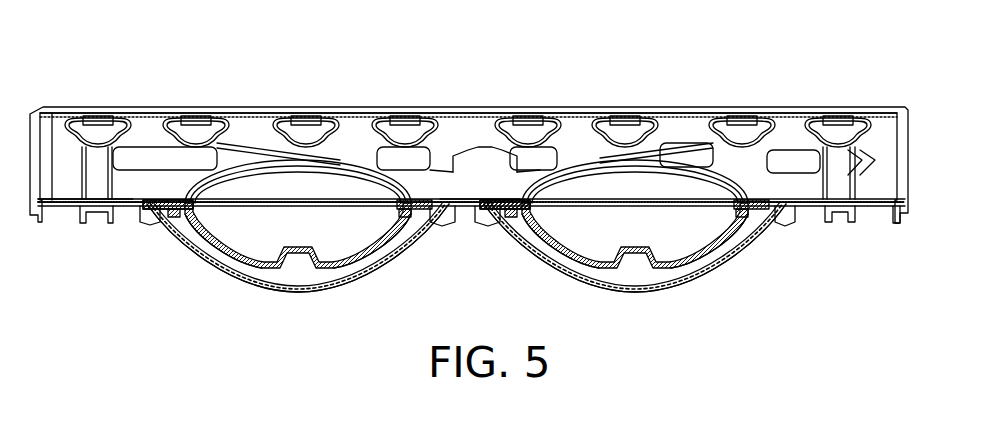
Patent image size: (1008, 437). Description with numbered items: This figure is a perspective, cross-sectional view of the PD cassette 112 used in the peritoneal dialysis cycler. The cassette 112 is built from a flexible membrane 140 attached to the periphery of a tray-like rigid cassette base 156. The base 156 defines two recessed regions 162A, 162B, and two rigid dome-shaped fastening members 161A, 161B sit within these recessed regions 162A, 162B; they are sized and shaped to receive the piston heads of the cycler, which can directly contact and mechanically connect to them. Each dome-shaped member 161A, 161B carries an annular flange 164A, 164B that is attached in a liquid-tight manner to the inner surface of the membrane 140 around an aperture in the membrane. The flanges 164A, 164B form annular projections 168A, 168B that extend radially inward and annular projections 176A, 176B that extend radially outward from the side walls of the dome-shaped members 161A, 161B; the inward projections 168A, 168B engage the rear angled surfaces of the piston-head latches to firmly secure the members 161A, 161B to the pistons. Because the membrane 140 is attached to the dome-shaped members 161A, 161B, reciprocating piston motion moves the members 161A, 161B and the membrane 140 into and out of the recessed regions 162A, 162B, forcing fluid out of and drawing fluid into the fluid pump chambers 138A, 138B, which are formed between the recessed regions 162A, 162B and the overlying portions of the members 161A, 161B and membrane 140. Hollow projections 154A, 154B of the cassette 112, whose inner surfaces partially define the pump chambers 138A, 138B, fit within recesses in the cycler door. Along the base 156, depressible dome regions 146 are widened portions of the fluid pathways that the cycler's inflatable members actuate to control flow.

The cassette 112 is at (643, 88).
The depressible dome region 146 is at (100, 125).
The flexible membrane 140 is at (133, 200).
The radially outward annular projection 176A is at (418, 186).
The radially outward annular projection 176B is at (757, 165).
The fluid pump chamber 138A is at (301, 276).
The fluid pump chamber 138B is at (638, 273).
The rigid dome-shaped fastening member 161A is at (231, 243).
The rigid dome-shaped fastening member 161B is at (584, 242).
The radially inward annular projection 168A is at (383, 235).
The radially inward annular projection 168B is at (738, 240).
The hollow projection 154A is at (224, 268).
The hollow projection 154B is at (755, 238).
The recessed region 162A is at (343, 288).
The recessed region 162B is at (680, 284).
The annular flange 164A is at (173, 207).
The annular flange 164B is at (510, 207).
The cassette base 156 is at (896, 222).